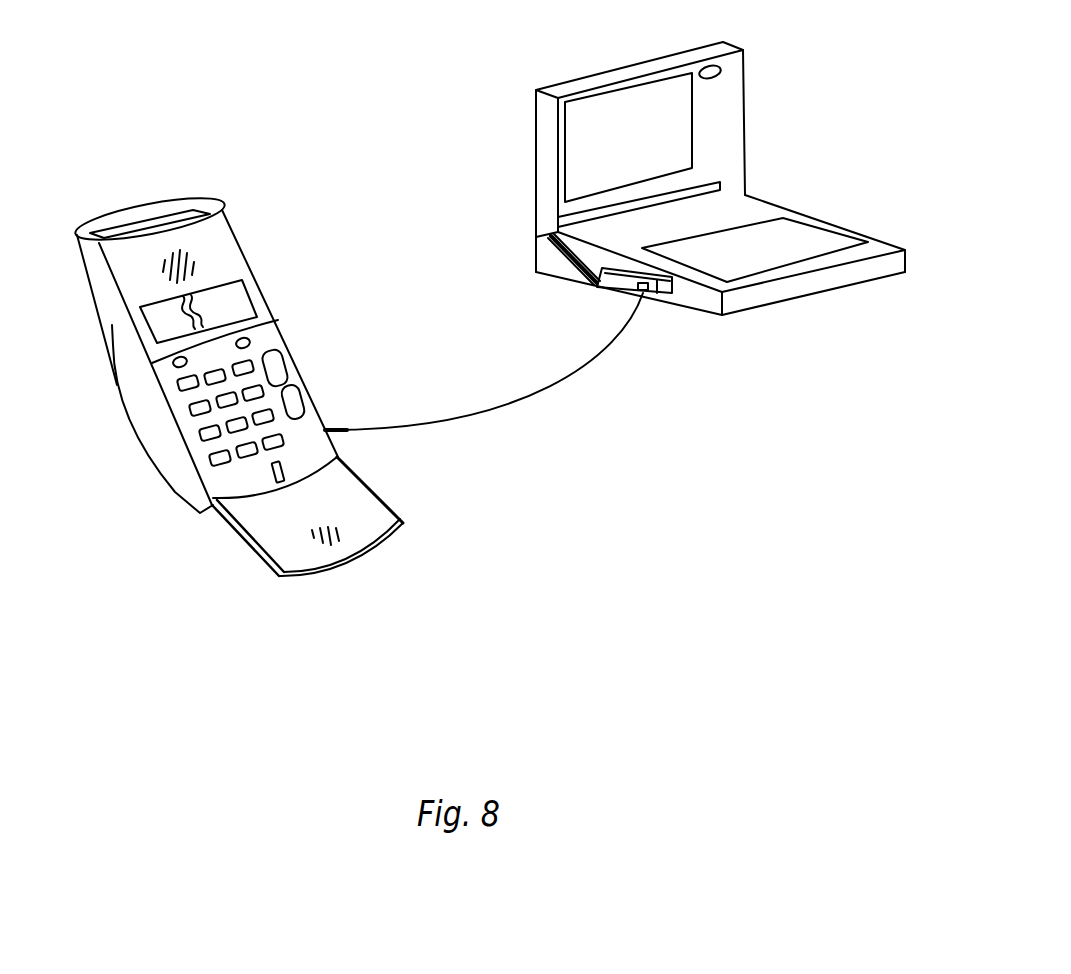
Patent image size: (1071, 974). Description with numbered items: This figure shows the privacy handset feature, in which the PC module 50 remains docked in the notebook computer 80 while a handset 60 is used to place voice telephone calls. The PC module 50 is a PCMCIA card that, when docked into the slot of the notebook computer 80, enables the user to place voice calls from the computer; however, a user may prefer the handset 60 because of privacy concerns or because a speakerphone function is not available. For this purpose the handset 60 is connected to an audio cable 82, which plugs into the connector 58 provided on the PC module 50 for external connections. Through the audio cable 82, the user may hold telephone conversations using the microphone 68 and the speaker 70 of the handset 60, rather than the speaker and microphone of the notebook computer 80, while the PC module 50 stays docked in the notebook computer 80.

The PC module 50 is at (507, 254).
The connector 58 is at (689, 318).
The handset 60 is at (205, 347).
The microphone 68 is at (157, 270).
The speaker 70 is at (335, 550).
The notebook computer 80 is at (720, 158).
The audio cable 82 is at (484, 398).